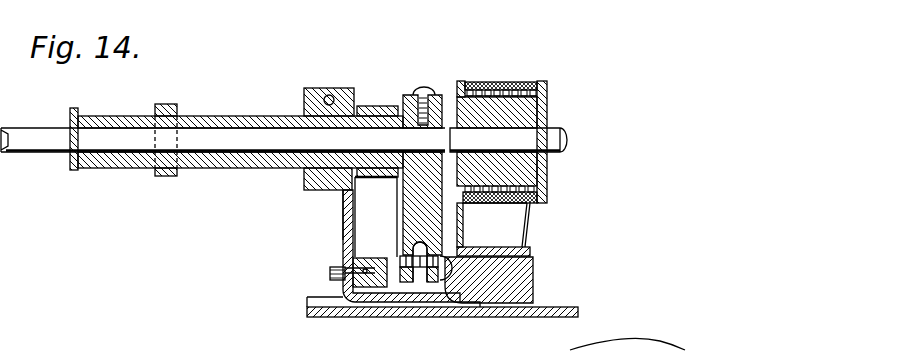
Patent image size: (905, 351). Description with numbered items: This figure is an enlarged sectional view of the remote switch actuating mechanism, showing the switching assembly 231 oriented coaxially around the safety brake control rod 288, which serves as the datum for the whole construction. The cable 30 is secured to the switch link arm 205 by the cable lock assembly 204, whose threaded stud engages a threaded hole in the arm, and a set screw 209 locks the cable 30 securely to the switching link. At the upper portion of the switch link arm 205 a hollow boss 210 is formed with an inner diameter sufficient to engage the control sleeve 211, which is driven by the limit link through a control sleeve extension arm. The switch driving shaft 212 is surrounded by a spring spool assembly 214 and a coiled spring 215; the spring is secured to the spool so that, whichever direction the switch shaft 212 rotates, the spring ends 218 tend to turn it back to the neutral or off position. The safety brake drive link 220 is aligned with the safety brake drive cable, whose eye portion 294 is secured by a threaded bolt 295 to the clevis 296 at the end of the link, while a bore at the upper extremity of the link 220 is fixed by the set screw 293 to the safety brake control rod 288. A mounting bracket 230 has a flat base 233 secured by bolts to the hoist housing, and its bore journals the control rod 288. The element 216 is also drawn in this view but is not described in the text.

The safety brake control rod 288 is at (47, 142).
The control sleeve 211 is at (222, 116).
The hollow boss 210 is at (345, 98).
The switching assembly 231 is at (330, 88).
The mounting bracket 230 is at (368, 196).
The set screw 209 is at (376, 258).
The switch link arm 205 is at (352, 230).
The cable lock assembly 204 is at (340, 263).
The cable 30 is at (346, 272).
The safety brake drive link 220 is at (428, 200).
The set screw 293 is at (429, 90).
The spring spool assembly 214 is at (511, 112).
The coiled spring 215 is at (494, 95).
The spring ends 218 is at (530, 218).
The flange 216 is at (528, 250).
The switch driving shaft 212 is at (552, 140).
The threaded bolt 295 is at (438, 278).
The eye portion 294 is at (422, 282).
The clevis 296 is at (410, 278).
The flat base 233 is at (313, 302).